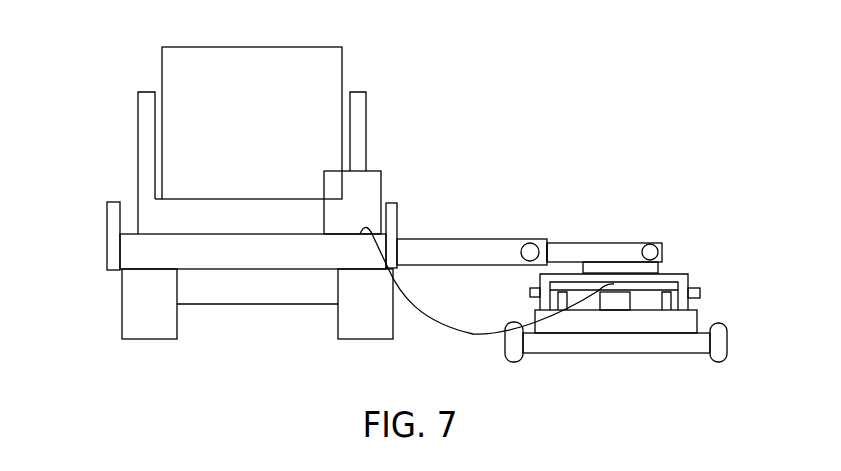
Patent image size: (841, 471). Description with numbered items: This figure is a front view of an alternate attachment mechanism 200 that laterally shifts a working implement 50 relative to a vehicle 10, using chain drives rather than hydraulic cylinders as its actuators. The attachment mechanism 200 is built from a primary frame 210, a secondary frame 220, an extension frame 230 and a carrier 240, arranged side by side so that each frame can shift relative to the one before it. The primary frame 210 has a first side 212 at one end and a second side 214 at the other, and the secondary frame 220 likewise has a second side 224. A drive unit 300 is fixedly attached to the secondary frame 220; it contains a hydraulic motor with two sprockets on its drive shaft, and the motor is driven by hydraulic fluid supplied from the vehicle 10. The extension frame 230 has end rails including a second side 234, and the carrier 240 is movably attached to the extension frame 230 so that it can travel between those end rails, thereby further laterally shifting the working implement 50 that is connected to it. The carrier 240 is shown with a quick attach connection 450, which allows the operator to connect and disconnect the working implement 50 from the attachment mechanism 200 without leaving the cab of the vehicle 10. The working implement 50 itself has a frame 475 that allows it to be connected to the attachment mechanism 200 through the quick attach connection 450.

The vehicle 10 is at (288, 122).
The working implement 50 is at (620, 353).
The attachment mechanism 200 is at (581, 163).
The primary frame 210 is at (242, 250).
The first side 212 is at (104, 250).
The second side 214 is at (400, 250).
The secondary frame 220 is at (470, 250).
The second side 224 is at (553, 247).
The extension frame 230 is at (607, 250).
The second side 234 is at (663, 253).
The carrier 240 is at (665, 268).
The drive unit 300 is at (368, 190).
The quick attach connection 450 is at (684, 256).
The frame 475 is at (716, 292).